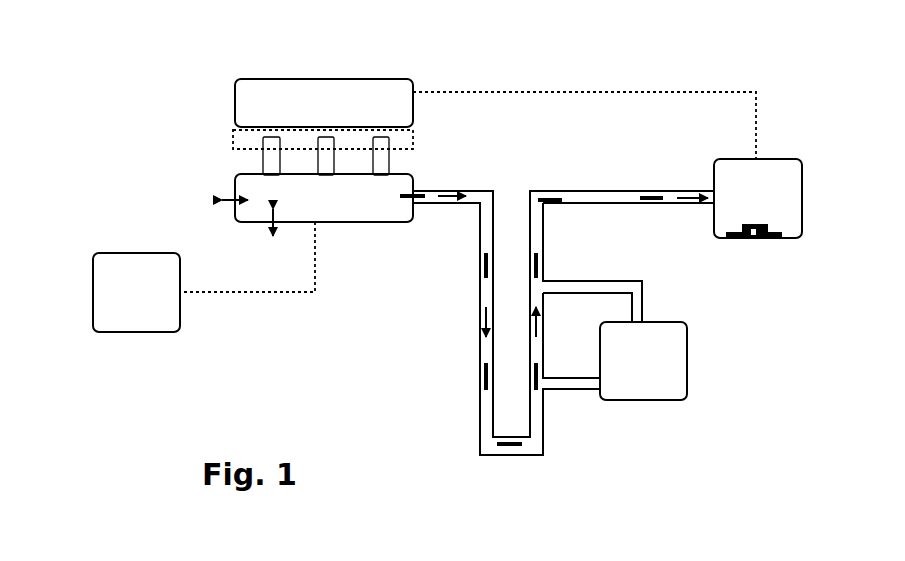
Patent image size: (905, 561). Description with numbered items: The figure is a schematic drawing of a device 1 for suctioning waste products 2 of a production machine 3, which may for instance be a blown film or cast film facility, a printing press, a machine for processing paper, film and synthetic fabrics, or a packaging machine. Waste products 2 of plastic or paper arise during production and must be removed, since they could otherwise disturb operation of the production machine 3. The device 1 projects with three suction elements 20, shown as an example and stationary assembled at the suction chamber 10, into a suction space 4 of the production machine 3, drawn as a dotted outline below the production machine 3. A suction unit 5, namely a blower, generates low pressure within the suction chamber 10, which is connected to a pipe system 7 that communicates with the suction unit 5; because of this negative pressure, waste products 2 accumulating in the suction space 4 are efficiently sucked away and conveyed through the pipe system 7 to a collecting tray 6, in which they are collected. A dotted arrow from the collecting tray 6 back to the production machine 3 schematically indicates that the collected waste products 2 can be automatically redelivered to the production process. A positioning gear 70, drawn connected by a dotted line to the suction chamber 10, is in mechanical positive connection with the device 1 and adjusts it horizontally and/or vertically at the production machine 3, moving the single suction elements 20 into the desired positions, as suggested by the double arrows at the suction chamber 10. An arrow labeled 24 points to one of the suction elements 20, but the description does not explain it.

The device 1 is at (128, 111).
The waste products 2 is at (650, 197).
The production machine 3 is at (331, 116).
The suction space 4 is at (403, 140).
The suction unit 5 is at (654, 375).
The collecting tray 6 is at (762, 204).
The pipe system 7 is at (590, 197).
The suction chamber 10 is at (340, 213).
The suction elements 20 is at (265, 147).
The dispensing direction 24 is at (272, 126).
The positioning gear 70 is at (155, 307).